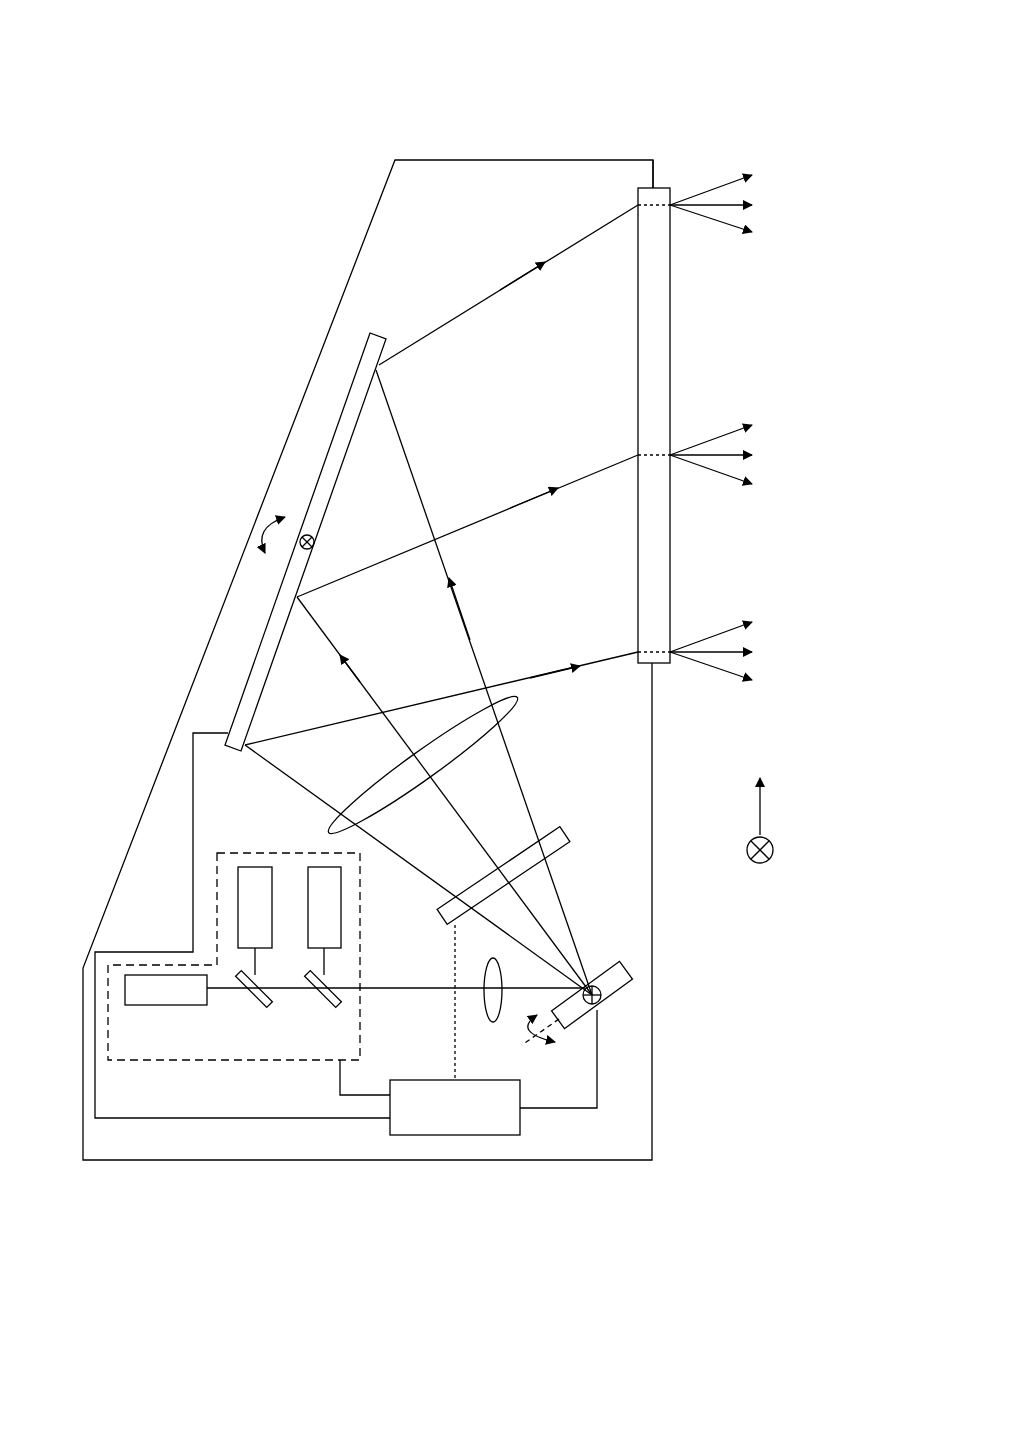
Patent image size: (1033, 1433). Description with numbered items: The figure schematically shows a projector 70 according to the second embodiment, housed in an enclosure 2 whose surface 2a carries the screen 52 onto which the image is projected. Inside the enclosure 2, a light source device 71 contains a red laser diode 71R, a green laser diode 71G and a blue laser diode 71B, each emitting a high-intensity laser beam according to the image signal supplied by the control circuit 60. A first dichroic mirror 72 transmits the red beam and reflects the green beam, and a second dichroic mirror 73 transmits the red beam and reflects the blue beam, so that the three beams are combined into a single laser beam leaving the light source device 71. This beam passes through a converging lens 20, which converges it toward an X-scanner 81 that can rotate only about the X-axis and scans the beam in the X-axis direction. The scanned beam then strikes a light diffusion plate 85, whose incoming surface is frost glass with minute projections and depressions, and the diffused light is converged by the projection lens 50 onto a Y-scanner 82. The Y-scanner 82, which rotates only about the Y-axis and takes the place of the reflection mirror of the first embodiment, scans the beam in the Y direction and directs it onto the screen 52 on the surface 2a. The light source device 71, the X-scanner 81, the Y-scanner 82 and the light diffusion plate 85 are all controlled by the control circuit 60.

The projector 70 is at (717, 100).
The enclosure 2 is at (371, 222).
The surface 2a is at (656, 177).
The screen 52 is at (672, 322).
The Y-scanner 82 is at (247, 682).
The projection lens 50 is at (519, 698).
The light diffusion plate 85 is at (572, 838).
The X-scanner 81 is at (630, 973).
The converging lens 20 is at (488, 1022).
The light source device 71 is at (234, 952).
The red laser diode 71R is at (158, 1006).
The green laser diode 71G is at (256, 867).
The blue laser diode 71B is at (315, 867).
The first dichroic mirror 72 is at (258, 1006).
The second dichroic mirror 73 is at (327, 1006).
The control circuit 60 is at (452, 1136).